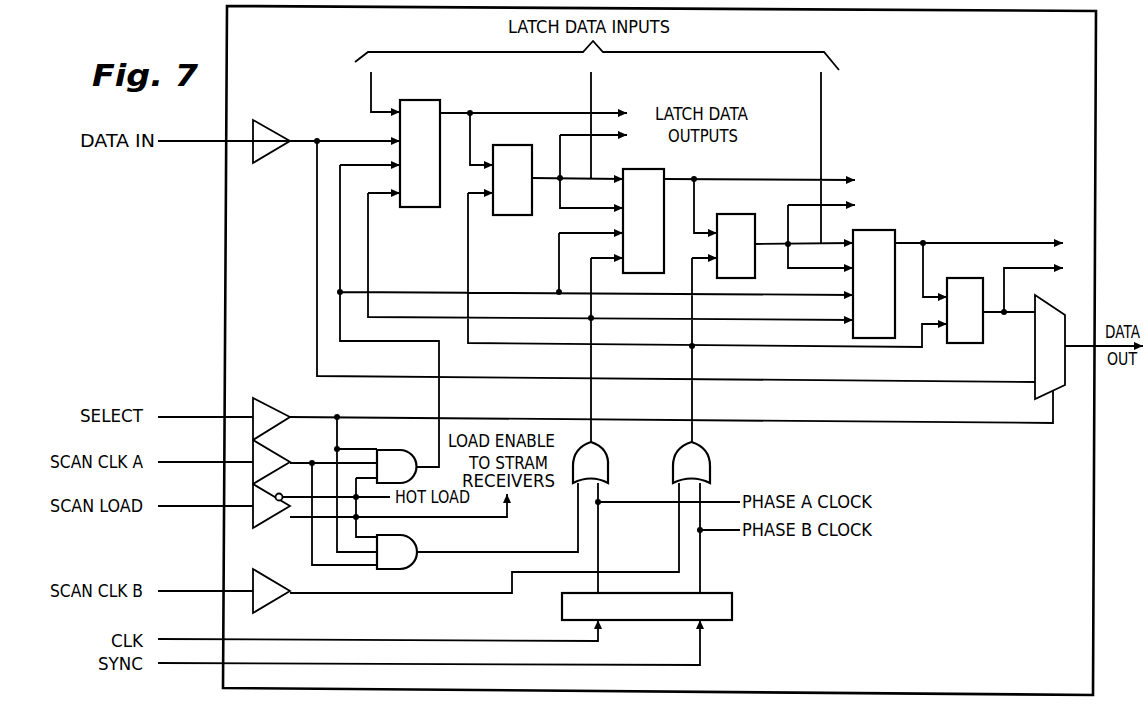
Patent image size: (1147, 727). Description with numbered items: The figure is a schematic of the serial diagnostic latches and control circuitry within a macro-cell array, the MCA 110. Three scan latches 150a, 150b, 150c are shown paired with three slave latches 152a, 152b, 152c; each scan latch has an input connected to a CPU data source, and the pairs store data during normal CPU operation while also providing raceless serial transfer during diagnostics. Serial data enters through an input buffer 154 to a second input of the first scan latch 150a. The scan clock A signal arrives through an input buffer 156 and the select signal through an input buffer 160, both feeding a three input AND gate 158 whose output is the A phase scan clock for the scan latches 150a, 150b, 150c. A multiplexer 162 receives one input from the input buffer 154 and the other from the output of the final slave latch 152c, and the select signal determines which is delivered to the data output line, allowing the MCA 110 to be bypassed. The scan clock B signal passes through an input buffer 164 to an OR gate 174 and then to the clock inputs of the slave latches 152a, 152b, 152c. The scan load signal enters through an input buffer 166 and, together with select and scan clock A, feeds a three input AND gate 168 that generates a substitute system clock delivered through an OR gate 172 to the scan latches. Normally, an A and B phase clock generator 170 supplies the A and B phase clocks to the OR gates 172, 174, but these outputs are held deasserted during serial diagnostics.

The MCA 110 is at (1095, 98).
The first scan latch 150a is at (430, 100).
The scan latch 150b is at (650, 169).
The scan latch 150c is at (873, 230).
The slave latch 152a is at (513, 215).
The slave latch 152b is at (721, 214).
The final slave latch 152c is at (965, 343).
The input buffer 154 is at (270, 125).
The input buffer 156 is at (266, 445).
The three input AND gate 158 is at (384, 451).
The input buffer 160 is at (262, 398).
The multiplexer 162 is at (1066, 368).
The input buffer 164 is at (270, 606).
The input buffer 166 is at (268, 522).
The three input AND gate 168 is at (412, 537).
The A and B phase clock generator 170 is at (732, 607).
The OR gate 172 is at (606, 462).
The OR gate 174 is at (708, 466).